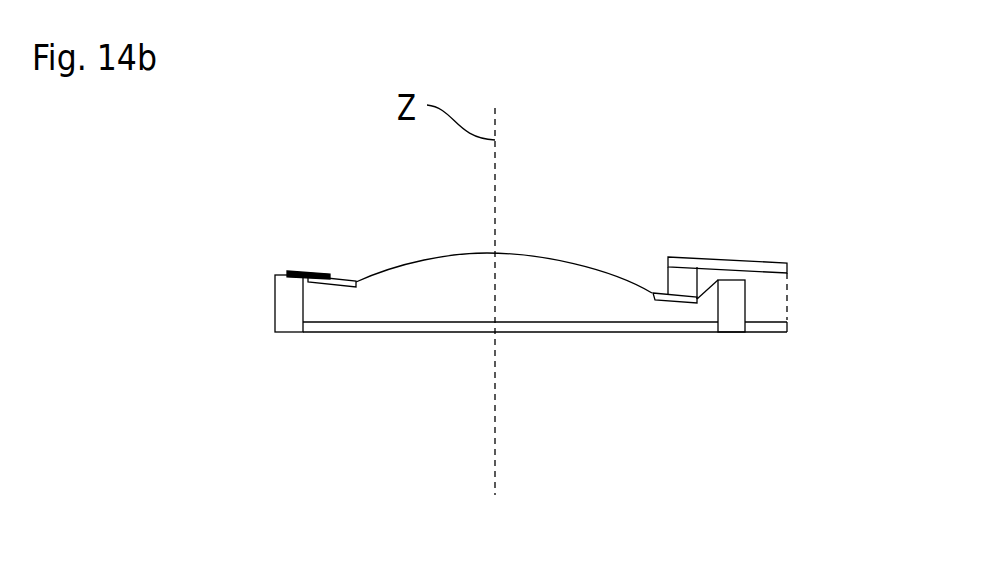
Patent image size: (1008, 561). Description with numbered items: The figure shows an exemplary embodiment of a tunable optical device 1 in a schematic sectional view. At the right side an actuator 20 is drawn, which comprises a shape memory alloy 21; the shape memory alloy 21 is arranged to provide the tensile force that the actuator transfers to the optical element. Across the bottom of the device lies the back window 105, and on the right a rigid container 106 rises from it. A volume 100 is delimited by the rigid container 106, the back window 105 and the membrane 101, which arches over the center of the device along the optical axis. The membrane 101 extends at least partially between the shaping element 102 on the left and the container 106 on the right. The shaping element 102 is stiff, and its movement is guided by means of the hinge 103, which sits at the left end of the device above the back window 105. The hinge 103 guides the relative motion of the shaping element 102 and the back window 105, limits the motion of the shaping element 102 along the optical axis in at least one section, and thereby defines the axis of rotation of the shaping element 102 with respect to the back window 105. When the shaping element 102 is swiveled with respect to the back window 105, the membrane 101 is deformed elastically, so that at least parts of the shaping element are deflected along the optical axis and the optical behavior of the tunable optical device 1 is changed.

The tunable optical device 1 is at (758, 173).
The actuator 20 is at (787, 270).
The shape memory alloy 21 is at (787, 305).
The volume 100 is at (537, 290).
The membrane 101 is at (480, 253).
The shaping element 102 is at (338, 277).
The hinge 103 is at (308, 275).
The back window 105 is at (332, 323).
The rigid container 106 is at (728, 322).